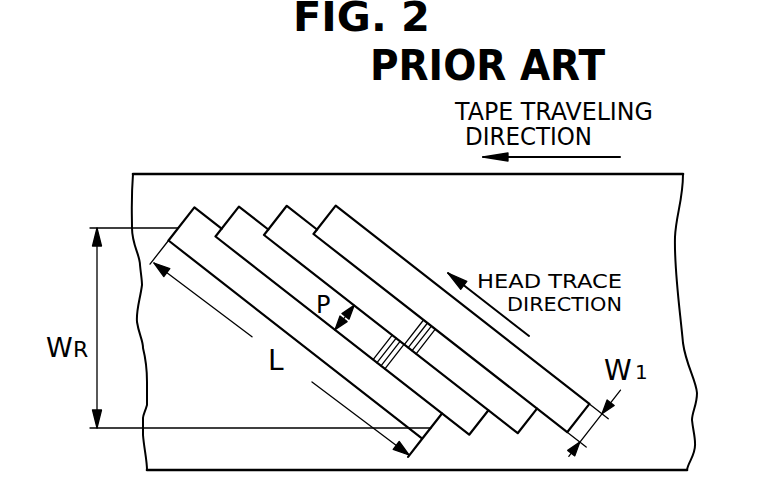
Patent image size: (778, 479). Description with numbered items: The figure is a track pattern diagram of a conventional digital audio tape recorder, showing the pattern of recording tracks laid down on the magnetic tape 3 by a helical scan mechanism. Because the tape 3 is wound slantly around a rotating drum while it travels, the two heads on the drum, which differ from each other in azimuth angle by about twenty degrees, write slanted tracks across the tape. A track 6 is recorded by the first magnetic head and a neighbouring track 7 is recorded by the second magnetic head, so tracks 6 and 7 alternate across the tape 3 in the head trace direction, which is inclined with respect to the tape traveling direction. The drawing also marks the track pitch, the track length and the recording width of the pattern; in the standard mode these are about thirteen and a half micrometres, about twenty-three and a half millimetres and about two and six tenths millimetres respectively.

The magnetic tape 3 is at (657, 185).
The track recorded by the first magnetic head 6 is at (196, 210).
The track recorded by the second magnetic head 7 is at (241, 210).